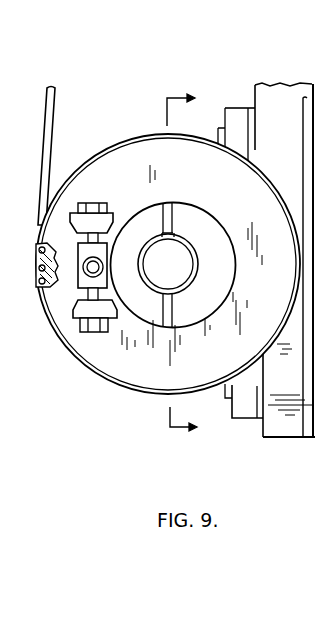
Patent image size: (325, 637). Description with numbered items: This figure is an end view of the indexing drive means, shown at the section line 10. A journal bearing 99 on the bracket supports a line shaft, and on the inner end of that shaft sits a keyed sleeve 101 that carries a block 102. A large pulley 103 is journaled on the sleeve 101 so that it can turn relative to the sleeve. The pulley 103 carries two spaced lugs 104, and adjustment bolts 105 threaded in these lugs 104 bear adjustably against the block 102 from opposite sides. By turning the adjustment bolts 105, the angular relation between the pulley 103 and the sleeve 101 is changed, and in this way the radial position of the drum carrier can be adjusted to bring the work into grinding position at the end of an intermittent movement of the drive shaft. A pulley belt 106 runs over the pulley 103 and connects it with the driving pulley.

The section line 10- 10 is at (170, 266).
The journal bearing 99 is at (238, 117).
The keyed sleeve 101 is at (152, 322).
The block 102 is at (85, 282).
The pulley 103 is at (138, 157).
The lugs 104 is at (75, 213).
The adjustment bolts 105 is at (100, 207).
The pulley belt 106 is at (45, 110).